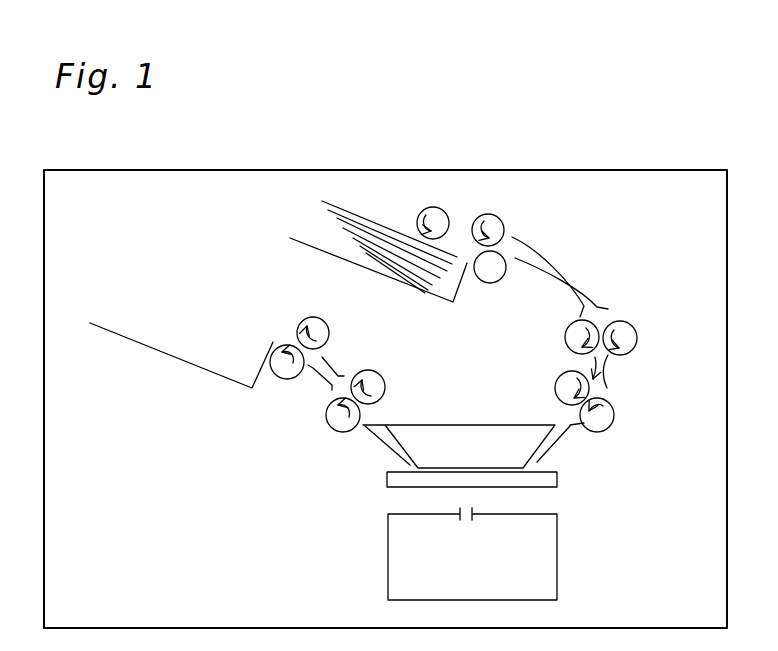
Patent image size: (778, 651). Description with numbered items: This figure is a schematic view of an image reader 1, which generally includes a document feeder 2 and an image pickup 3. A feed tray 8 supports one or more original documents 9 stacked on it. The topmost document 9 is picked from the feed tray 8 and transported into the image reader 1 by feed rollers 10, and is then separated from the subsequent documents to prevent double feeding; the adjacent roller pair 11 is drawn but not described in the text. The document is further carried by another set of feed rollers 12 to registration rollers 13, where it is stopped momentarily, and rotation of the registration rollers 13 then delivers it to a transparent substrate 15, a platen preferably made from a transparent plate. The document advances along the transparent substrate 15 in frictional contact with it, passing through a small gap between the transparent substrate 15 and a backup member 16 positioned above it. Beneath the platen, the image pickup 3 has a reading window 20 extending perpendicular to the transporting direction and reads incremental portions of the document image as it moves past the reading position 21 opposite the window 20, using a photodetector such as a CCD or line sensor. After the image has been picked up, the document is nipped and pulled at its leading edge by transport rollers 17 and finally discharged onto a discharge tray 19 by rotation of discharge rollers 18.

The image reader 1 is at (318, 167).
The document feeder 2 is at (223, 442).
The image pickup 3 is at (560, 548).
The feed tray 8 is at (305, 245).
The original documents 9 is at (352, 206).
The feed rollers 10 is at (447, 211).
The separation feed rollers 11 is at (505, 221).
The feed rollers 12 is at (636, 329).
The registration rollers 13 is at (614, 405).
The transparent substrate 15 is at (387, 476).
The backup member 16 is at (458, 425).
The transport rollers 17 is at (380, 375).
The discharge rollers 18 is at (333, 322).
The discharge tray 19 is at (172, 313).
The reading window 20 is at (467, 510).
The reading position 21 is at (457, 487).